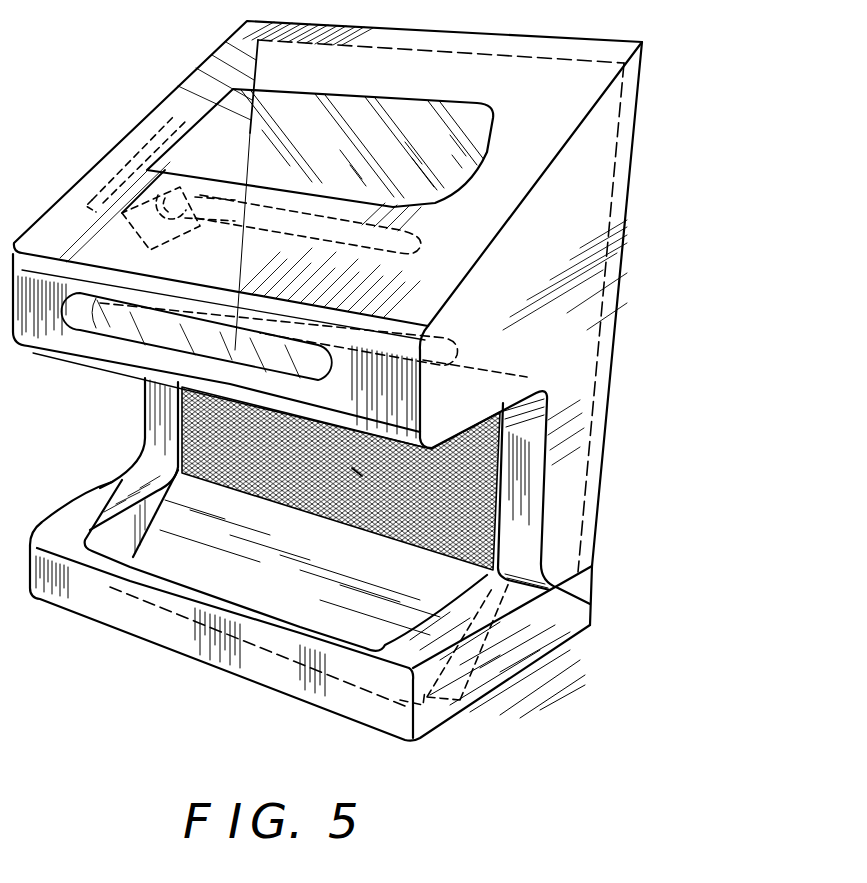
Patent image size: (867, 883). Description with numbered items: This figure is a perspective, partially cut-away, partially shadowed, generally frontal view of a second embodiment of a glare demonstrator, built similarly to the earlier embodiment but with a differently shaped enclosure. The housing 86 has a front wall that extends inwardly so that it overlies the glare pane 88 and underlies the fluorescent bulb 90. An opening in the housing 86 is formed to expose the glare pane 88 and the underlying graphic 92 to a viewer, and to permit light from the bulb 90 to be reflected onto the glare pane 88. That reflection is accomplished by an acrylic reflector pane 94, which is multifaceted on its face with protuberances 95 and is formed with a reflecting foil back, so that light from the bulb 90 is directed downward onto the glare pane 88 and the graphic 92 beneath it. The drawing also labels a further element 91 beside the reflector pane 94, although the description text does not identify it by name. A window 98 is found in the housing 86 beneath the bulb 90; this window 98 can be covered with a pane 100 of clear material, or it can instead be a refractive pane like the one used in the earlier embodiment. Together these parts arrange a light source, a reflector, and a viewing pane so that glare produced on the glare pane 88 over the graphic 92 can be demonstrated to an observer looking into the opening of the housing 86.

The housing 86 is at (593, 170).
The glare pane 88 is at (277, 590).
The fluorescent bulb 90 is at (207, 200).
The right support 91 is at (525, 535).
The graphic 92 is at (470, 680).
The acrylic reflector pane 94 is at (443, 462).
The protuberances 95 is at (357, 472).
The window 98 is at (462, 380).
The pane of clear material 100 is at (340, 393).